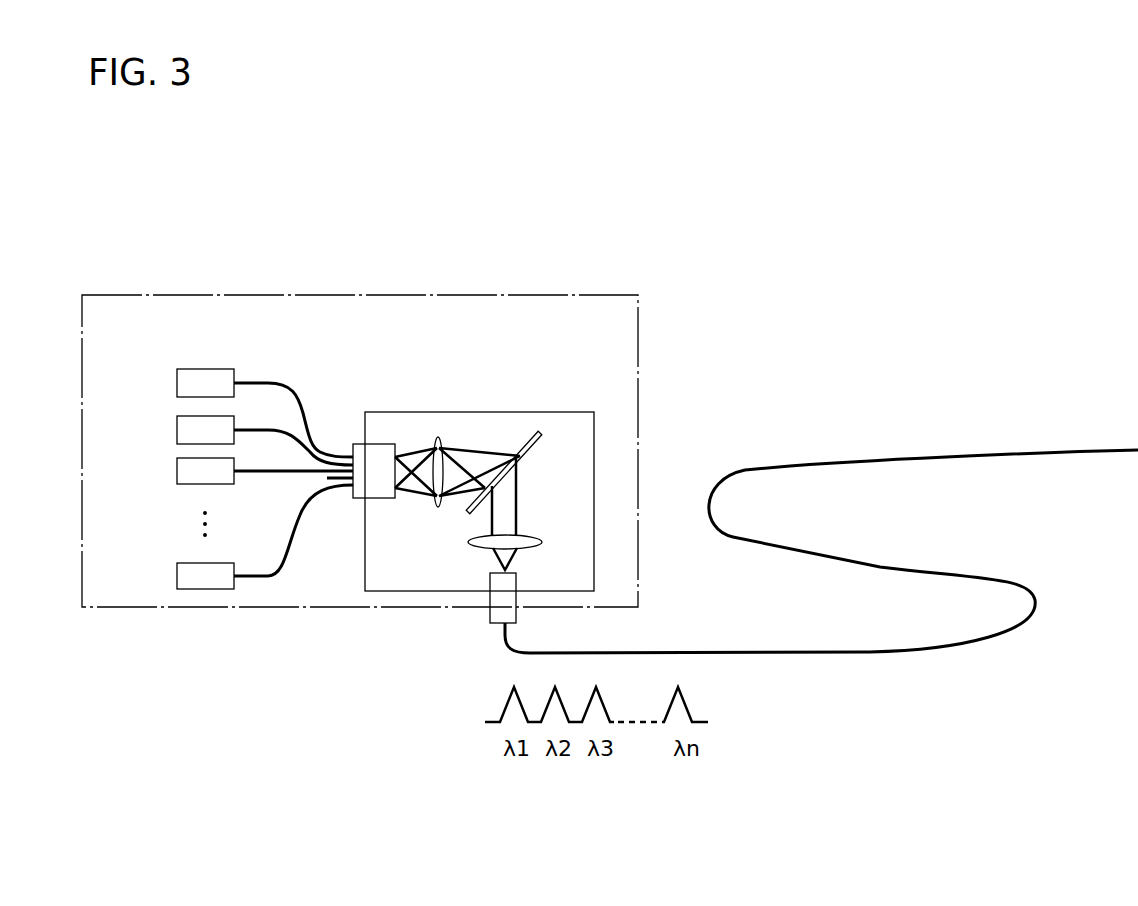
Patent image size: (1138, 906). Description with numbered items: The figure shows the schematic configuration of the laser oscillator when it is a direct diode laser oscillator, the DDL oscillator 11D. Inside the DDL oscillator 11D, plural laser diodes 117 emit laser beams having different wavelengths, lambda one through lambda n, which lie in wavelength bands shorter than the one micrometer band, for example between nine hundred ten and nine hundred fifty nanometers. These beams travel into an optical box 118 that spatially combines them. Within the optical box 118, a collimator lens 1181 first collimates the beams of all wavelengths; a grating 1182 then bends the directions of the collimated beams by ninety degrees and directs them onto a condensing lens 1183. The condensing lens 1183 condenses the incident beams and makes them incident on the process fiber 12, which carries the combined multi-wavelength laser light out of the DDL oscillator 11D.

The DDL oscillator 11D is at (412, 296).
The laser diodes 117 is at (210, 413).
The optical box 118 is at (520, 412).
The collimator lens 1181 is at (438, 437).
The grating 1182 is at (533, 450).
The condensing lens 1183 is at (528, 547).
The process fiber 12 is at (964, 455).